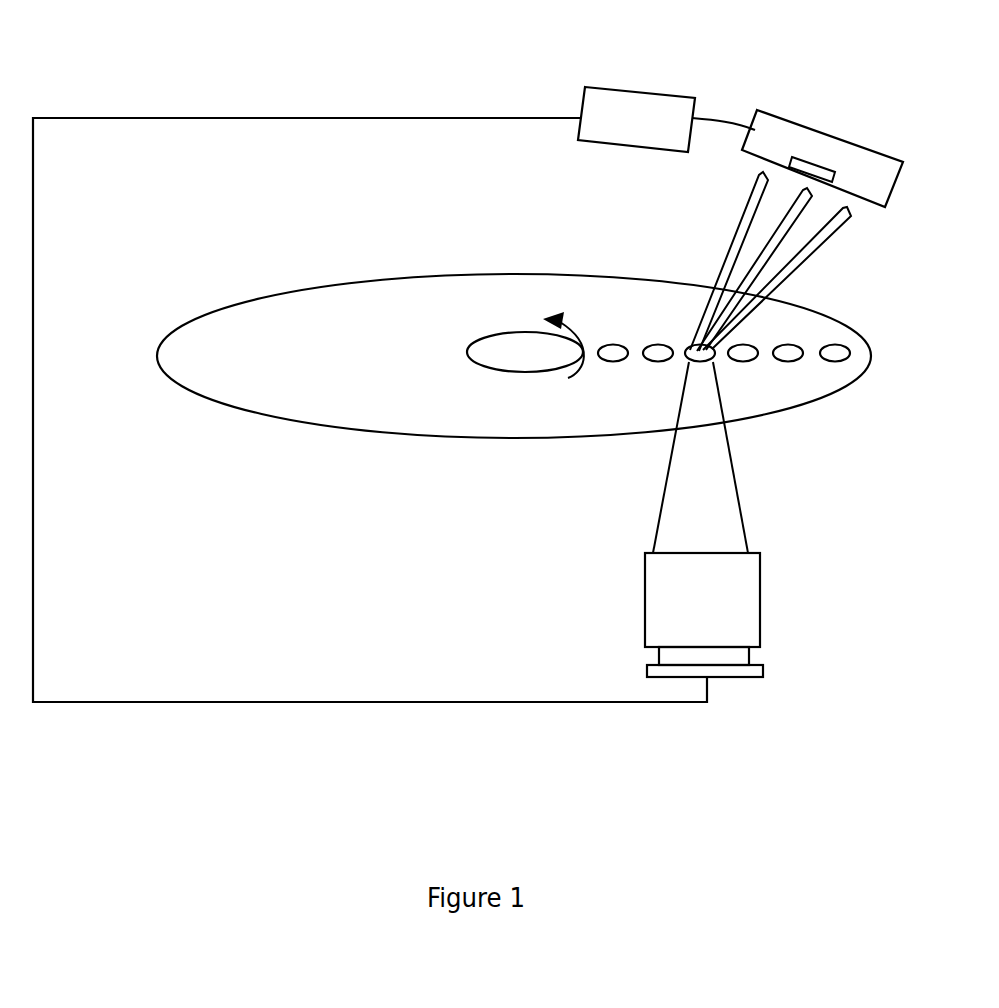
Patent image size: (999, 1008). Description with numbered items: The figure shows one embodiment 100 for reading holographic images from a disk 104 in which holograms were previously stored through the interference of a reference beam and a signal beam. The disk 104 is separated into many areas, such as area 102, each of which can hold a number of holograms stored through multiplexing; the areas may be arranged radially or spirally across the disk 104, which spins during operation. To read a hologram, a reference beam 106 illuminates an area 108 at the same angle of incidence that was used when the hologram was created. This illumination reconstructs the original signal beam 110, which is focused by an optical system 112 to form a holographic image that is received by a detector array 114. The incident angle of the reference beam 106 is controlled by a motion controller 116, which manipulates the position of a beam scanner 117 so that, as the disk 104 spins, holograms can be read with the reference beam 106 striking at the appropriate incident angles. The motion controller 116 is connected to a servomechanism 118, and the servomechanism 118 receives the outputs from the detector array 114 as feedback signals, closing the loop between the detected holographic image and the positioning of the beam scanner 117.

The embodiment 100 is at (516, 364).
The area 102 is at (840, 352).
The disk 104 is at (177, 348).
The reference beam 106 is at (845, 232).
The area 108 is at (690, 350).
The signal beam 110 is at (723, 485).
The optical system 112 is at (748, 608).
The detector array 114 is at (772, 672).
The motion controller 116 is at (878, 170).
The beam scanner 117 is at (807, 168).
The servomechanism 118 is at (645, 100).